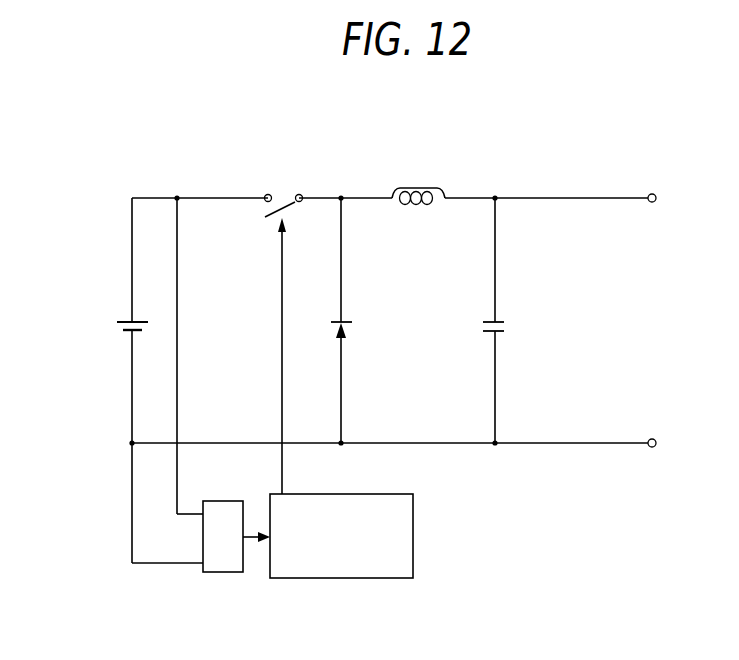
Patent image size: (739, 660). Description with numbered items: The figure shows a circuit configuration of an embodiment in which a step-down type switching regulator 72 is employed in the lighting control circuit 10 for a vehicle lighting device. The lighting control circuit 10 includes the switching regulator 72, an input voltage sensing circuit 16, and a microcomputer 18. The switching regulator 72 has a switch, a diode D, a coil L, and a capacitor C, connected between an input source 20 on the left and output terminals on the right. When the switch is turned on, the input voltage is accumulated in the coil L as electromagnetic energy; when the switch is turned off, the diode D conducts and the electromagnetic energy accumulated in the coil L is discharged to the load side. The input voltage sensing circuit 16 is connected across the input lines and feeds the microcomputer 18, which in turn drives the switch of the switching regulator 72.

The lighting control circuit 10 is at (392, 326).
The step-down type switching regulator 72 is at (328, 163).
The battery 20 is at (129, 321).
The input voltage sensing circuit 16 is at (210, 572).
The microcomputer 18 is at (414, 497).